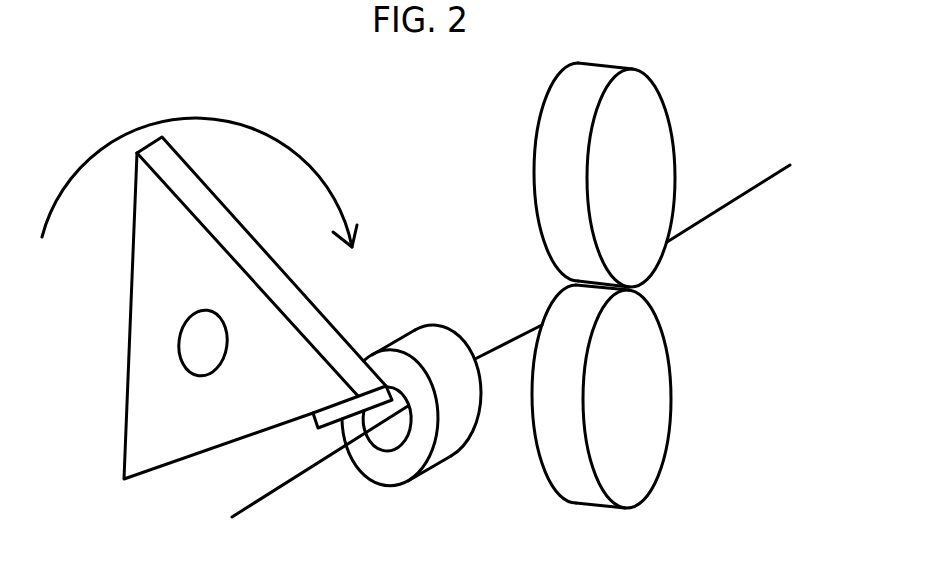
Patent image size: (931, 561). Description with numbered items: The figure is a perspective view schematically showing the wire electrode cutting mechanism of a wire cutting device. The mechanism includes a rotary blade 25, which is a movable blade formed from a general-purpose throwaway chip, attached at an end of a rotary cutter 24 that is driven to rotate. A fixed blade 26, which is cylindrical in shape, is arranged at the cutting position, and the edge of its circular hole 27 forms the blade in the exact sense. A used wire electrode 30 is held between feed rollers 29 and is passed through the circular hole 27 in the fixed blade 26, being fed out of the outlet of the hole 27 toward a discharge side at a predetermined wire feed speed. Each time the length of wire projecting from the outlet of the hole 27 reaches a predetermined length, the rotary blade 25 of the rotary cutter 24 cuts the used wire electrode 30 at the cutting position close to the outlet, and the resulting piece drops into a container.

The rotary cutter 24 is at (148, 340).
The rotary blade 25 is at (332, 417).
The fixed blade 26 is at (422, 343).
The circular hole 27 is at (393, 430).
The feed rollers 29 is at (647, 147).
The used wire electrode 30 is at (712, 215).